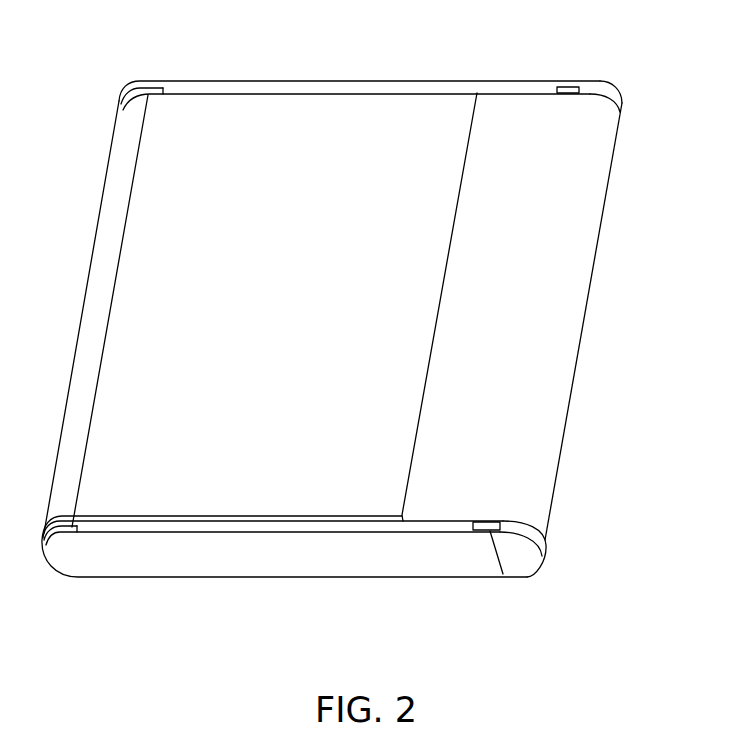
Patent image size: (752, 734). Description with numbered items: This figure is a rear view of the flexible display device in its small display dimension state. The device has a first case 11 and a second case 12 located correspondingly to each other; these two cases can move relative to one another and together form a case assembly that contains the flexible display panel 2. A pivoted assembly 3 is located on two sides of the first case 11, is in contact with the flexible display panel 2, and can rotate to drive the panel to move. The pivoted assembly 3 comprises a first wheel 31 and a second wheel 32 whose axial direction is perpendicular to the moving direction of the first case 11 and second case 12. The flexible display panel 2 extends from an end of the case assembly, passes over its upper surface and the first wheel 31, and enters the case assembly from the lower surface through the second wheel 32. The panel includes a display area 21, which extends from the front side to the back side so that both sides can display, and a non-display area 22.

The flexible display panel 2 is at (378, 313).
The display area 21 is at (195, 115).
The non-display area 22 is at (568, 330).
The pivoted assembly 3 is at (369, 323).
The first wheel 31 is at (72, 527).
The second wheel 32 is at (574, 87).
The first case 11 is at (162, 555).
The second case 12 is at (528, 558).